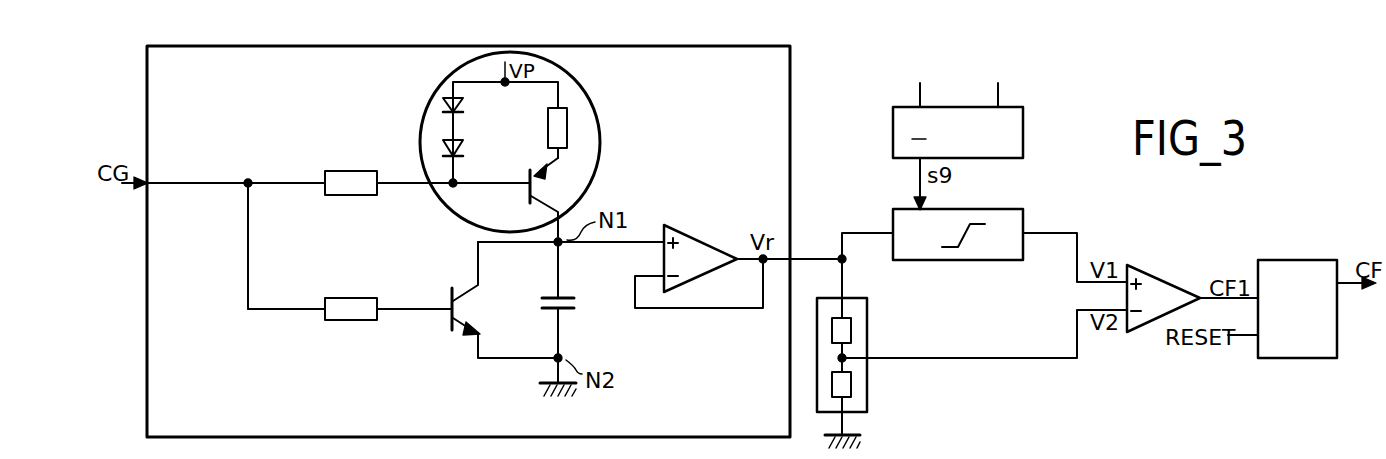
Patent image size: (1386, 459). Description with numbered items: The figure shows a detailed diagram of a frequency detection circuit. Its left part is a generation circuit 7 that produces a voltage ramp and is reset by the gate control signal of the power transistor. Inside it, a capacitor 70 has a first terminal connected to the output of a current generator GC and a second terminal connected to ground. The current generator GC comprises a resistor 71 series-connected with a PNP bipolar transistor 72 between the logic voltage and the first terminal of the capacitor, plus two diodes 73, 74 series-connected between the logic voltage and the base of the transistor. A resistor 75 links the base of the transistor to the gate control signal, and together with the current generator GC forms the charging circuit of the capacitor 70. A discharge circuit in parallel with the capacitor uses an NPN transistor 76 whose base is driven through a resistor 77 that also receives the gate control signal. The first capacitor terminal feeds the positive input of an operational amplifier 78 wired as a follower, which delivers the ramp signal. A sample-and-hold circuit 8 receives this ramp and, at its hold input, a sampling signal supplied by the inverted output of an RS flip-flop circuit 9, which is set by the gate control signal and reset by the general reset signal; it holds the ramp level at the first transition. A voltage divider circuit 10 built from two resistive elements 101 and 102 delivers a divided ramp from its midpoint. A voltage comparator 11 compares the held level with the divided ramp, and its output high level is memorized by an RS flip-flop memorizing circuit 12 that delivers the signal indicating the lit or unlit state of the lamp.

The voltage ramp generation circuit 7 is at (792, 71).
The sample-and-hold circuit 8 is at (1023, 214).
The RS flip-flop circuit 9 is at (1023, 125).
The voltage divider circuit 10 is at (881, 352).
The voltage comparator 11 is at (1160, 272).
The memorizing circuit 12 is at (1295, 260).
The capacitor 70 is at (574, 309).
The resistor 71 is at (568, 126).
The transistor 72 is at (529, 175).
The diode 73 is at (468, 104).
The diode 74 is at (465, 148).
The resistor 75 is at (353, 171).
The transistor 76 is at (451, 296).
The resistor 77 is at (352, 321).
The operational amplifier 78 is at (704, 238).
The resistive element 101 is at (851, 325).
The resistive element 102 is at (851, 383).
The current generator GC is at (628, 89).